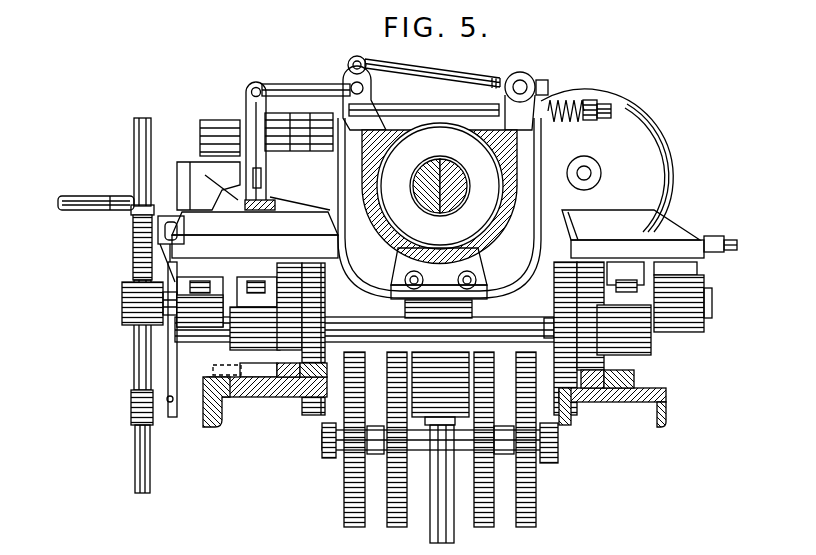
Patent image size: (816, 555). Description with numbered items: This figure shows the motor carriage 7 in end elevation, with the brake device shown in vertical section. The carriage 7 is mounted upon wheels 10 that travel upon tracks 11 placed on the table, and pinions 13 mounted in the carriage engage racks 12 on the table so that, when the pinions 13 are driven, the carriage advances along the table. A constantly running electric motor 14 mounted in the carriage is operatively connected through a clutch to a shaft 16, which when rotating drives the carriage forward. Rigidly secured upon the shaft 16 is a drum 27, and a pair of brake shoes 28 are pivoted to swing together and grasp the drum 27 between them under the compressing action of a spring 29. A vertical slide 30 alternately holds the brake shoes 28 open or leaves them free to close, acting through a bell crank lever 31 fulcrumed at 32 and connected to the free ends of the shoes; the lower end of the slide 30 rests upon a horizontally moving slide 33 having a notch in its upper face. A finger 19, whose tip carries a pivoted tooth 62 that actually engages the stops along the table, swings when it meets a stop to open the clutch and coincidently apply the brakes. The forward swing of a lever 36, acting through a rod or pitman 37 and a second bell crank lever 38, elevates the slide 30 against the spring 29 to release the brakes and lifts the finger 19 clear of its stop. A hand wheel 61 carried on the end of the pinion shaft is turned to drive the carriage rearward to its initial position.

The carriage 7 is at (639, 230).
The wheels 10 is at (310, 400).
The tracks 11 is at (222, 427).
The racks 12 is at (292, 397).
The pinions 13 is at (654, 358).
The motor 14 is at (626, 118).
The shaft 16 is at (442, 170).
The finger 19 is at (230, 150).
The drum 27 is at (482, 195).
The brake shoes 28 is at (383, 130).
The spring 29 is at (567, 100).
The slide 30 is at (248, 110).
The bell crank lever 31 is at (317, 83).
The fulcrum 32 is at (258, 86).
The horizontal slide 33 is at (238, 208).
The lever 36 is at (172, 350).
The rod or pitman 37 is at (173, 240).
The bell crank lever 38 is at (261, 186).
The hand wheel 61 is at (133, 255).
The tooth 62 is at (137, 410).